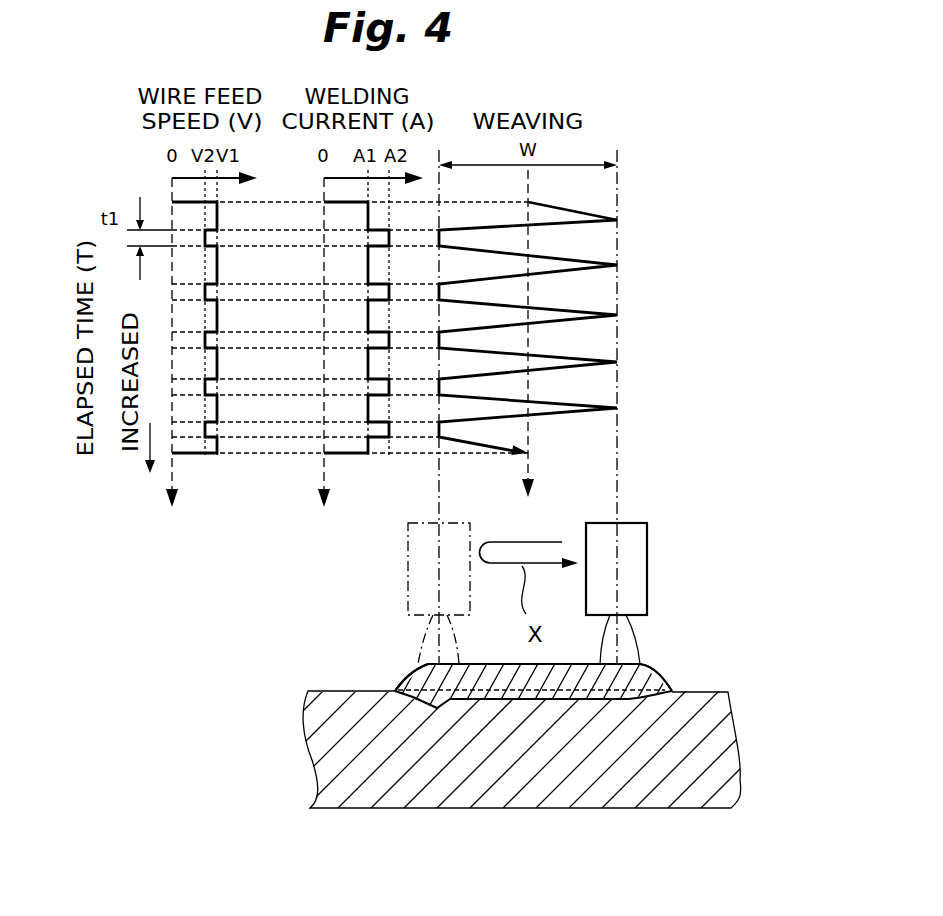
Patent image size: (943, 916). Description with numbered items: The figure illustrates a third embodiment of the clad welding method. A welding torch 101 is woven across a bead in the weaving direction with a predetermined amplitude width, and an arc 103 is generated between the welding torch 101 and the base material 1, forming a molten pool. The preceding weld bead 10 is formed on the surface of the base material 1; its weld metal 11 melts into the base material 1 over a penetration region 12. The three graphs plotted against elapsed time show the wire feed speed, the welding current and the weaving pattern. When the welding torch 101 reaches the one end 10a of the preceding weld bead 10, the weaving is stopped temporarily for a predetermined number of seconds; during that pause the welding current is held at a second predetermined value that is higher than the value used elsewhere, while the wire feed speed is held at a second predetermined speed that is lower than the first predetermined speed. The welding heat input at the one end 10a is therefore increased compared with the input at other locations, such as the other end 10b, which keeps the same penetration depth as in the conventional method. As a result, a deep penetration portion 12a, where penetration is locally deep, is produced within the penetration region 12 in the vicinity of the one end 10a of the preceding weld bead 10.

The base material 1 is at (544, 764).
The preceding weld bead 10 is at (544, 764).
The one end of the preceding weld bead 10a is at (393, 689).
The other end of the preceding weld bead 10b is at (672, 690).
The weld metal 11 is at (530, 743).
The penetration region 12 is at (544, 762).
The deep penetration portion 12a is at (437, 708).
The welding torch 101 is at (638, 557).
The arc 103 is at (622, 646).